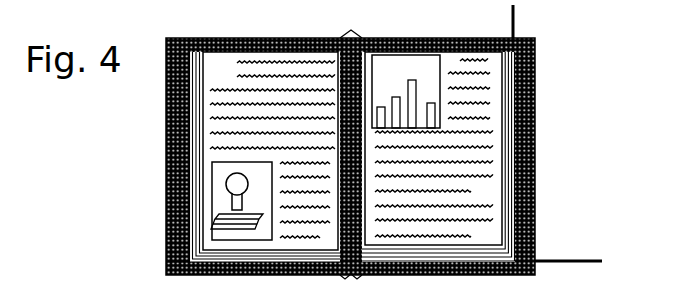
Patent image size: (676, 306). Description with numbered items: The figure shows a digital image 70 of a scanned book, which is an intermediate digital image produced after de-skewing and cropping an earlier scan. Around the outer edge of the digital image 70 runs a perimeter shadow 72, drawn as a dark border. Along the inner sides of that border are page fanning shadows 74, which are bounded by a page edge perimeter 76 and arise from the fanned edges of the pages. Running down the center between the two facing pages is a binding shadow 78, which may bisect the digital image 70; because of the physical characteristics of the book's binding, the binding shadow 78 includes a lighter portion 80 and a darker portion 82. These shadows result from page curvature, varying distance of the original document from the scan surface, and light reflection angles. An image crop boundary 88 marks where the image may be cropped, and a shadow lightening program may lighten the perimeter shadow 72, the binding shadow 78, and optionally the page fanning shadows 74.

The digital image 70 is at (604, 94).
The perimeter shadow 72 is at (241, 38).
The page fanning shadows 74 is at (169, 140).
The page edge perimeter 76 is at (515, 22).
The binding shadow 78 is at (350, 36).
The lighter portion 80 is at (338, 273).
The darker portion 82 is at (362, 272).
The image crop boundary 88 is at (169, 262).